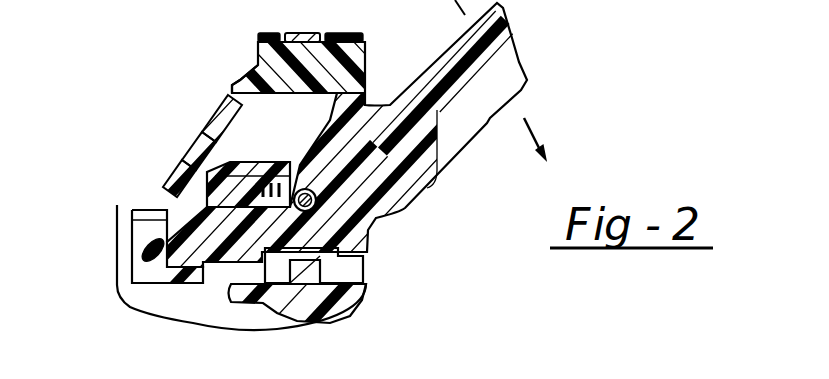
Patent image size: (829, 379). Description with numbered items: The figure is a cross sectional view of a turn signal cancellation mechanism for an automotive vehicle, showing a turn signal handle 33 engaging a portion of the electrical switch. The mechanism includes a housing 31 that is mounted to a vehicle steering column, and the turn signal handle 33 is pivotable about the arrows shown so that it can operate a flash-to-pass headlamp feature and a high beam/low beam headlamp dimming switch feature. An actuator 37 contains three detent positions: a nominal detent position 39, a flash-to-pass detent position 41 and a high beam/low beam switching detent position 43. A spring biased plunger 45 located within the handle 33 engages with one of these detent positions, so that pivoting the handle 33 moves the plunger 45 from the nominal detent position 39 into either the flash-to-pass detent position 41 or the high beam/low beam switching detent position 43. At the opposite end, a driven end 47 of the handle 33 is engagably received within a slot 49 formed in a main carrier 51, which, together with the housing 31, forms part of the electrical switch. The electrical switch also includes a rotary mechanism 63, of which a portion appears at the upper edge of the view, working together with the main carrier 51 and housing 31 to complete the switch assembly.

The housing 31 is at (368, 296).
The turn signal handle 33 is at (433, 67).
The actuator 37 is at (215, 110).
The nominal detent position 39 is at (200, 132).
The flash-to-pass detent position 41 is at (163, 165).
The high beam/low beam switching detent position 43 is at (167, 185).
The spring biased plunger 45 is at (253, 180).
The driven end 47 is at (123, 250).
The slot 49 is at (130, 240).
The main carrier 51 is at (157, 275).
The rotary mechanism 63 is at (592, 0).